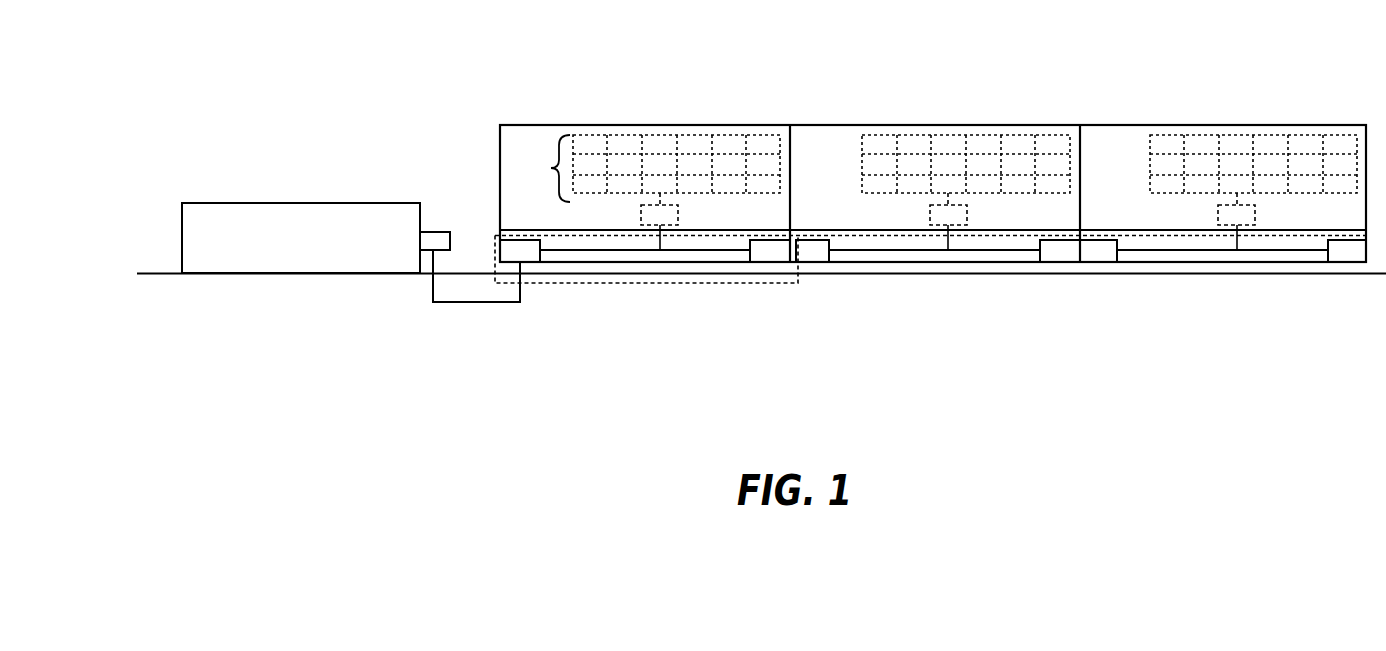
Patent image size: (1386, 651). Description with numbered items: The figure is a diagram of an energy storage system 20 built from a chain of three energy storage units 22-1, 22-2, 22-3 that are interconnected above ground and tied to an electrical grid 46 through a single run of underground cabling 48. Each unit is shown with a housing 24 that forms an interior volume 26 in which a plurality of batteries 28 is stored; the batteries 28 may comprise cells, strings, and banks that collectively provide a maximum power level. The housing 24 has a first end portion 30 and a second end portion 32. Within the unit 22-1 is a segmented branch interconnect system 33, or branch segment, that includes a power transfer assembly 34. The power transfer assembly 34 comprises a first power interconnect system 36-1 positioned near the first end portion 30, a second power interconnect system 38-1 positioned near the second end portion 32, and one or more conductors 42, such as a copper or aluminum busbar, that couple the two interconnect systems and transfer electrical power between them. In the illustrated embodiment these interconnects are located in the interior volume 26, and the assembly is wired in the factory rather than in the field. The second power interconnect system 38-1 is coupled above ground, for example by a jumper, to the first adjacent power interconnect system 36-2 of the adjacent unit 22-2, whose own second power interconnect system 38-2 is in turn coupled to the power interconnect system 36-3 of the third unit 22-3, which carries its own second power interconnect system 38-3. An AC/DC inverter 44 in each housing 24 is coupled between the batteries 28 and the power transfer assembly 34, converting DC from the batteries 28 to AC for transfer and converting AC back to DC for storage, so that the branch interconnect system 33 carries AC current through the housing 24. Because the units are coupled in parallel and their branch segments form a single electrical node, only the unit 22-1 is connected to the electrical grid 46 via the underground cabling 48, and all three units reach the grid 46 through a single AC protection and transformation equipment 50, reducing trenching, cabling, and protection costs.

The energy storage system 20 is at (605, 36).
The energy storage unit 22-1 is at (687, 125).
The first adjacent energy storage unit 22-2 is at (938, 125).
The energy storage unit 22-3 is at (1217, 125).
The housing 24 is at (500, 134).
The interior volume 26 is at (512, 197).
The batteries 28 is at (550, 168).
The first end portion 30 is at (515, 123).
The second end portion 32 is at (770, 123).
The segmented branch interconnect system 33 is at (530, 230).
The power transfer assembly 34 is at (680, 284).
The first power interconnect system 36-1 is at (528, 256).
The first adjacent power interconnect system 36-2 is at (812, 258).
The power interconnect system 36-3 is at (1097, 258).
The second power interconnect system 38-1 is at (768, 258).
The second power interconnect system 38-2 is at (1053, 258).
The second power interconnect system 38-3 is at (1348, 258).
The conductors 42 is at (597, 252).
The AC/DC inverter 44 is at (678, 215).
The electrical grid 46 is at (292, 203).
The underground cabling 48 is at (452, 302).
The AC protection and transformation equipment 50 is at (443, 232).